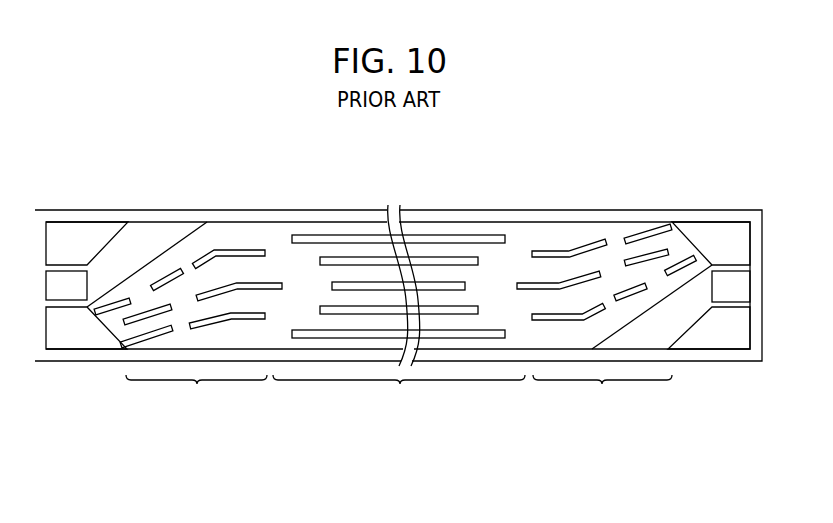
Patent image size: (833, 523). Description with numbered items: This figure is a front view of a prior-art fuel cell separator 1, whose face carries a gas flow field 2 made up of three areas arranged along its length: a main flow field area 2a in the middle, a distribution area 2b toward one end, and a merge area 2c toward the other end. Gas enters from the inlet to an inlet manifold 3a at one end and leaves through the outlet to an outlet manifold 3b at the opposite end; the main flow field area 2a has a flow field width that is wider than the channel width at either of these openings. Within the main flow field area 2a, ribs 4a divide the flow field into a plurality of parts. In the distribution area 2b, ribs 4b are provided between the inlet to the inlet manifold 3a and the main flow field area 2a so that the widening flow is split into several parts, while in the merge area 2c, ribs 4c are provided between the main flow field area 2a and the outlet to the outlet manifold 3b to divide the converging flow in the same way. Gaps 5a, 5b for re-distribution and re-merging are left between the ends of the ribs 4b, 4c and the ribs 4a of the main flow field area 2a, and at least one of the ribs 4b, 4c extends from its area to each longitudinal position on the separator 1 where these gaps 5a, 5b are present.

The separator 1 is at (669, 176).
The gas flow field 2 is at (521, 236).
The main flow field area 2a is at (399, 394).
The distribution area 2b is at (602, 394).
The merge area 2c is at (196, 394).
The inlet manifold 3a is at (720, 243).
The outlet manifold 3b is at (83, 337).
The ribs 4a is at (450, 262).
The ribs 4b is at (583, 277).
The ribs 4c is at (210, 293).
The gap 5a is at (503, 283).
The gap 5b is at (295, 283).